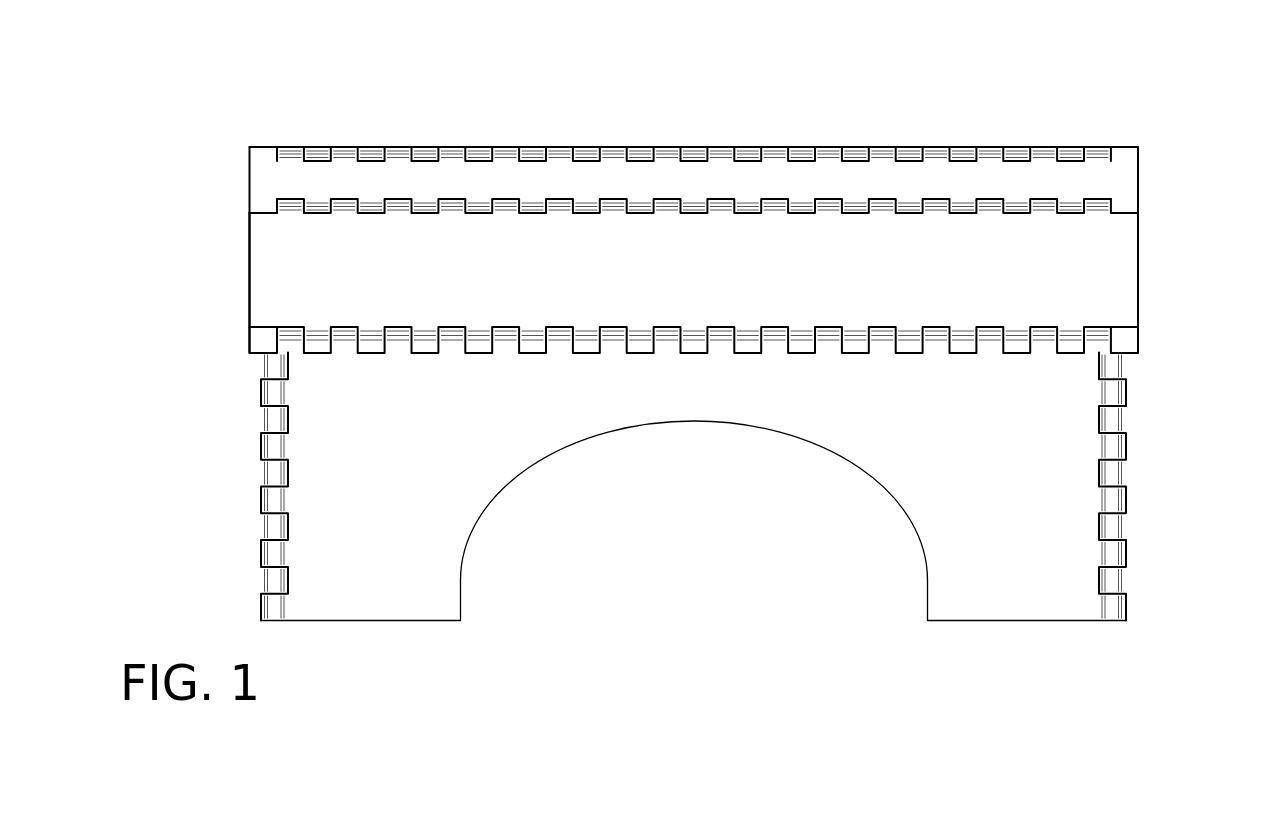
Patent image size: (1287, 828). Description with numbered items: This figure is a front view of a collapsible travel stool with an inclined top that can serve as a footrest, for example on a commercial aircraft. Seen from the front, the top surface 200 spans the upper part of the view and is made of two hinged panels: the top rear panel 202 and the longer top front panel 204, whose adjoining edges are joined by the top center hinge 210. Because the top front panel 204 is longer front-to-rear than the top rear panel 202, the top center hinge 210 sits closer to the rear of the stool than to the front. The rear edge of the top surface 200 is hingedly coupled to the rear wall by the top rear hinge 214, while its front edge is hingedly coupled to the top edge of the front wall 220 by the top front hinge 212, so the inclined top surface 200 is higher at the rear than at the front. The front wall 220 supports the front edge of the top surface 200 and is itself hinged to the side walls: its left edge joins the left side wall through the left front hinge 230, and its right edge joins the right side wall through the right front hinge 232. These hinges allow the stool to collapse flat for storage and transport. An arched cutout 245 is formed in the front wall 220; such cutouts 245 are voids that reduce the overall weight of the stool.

The top surface 200 is at (1154, 145).
The top rear panel 202 is at (265, 166).
The top front panel 204 is at (280, 278).
The top center hinge 210 is at (937, 199).
The top front hinge 212 is at (693, 352).
The top rear hinge 214 is at (617, 150).
The front wall 220 is at (983, 602).
The left front hinge 230 is at (272, 502).
The right front hinge 232 is at (1119, 543).
The cutouts 245 is at (492, 507).